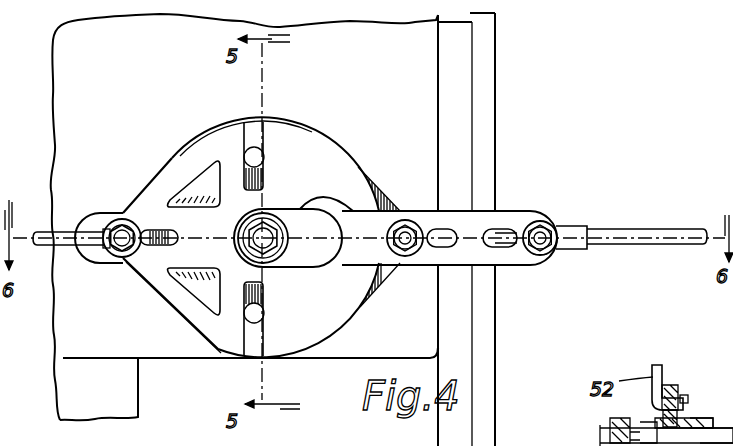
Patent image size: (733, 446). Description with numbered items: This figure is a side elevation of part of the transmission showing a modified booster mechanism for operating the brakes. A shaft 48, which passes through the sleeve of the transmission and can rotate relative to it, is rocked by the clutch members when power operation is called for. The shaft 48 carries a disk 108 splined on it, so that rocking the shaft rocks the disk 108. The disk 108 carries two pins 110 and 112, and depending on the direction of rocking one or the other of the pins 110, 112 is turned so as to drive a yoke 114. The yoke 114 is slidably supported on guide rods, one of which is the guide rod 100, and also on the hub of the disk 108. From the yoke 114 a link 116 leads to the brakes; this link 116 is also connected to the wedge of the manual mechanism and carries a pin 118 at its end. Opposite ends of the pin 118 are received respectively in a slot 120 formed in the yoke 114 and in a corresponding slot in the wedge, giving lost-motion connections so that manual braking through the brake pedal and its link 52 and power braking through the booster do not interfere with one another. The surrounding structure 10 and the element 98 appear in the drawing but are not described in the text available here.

The channel bar frame member 10 is at (422, 118).
The shaft 48 is at (272, 227).
The link 52 is at (44, 232).
The disk 108 is at (302, 162).
The pin 110 is at (256, 149).
The pin 112 is at (250, 321).
The yoke 114 is at (157, 270).
The link 116 is at (645, 236).
The pin 118 is at (545, 230).
The slot 120 is at (508, 244).
The guide rod 100 is at (689, 418).
The shaft section 98 is at (714, 440).